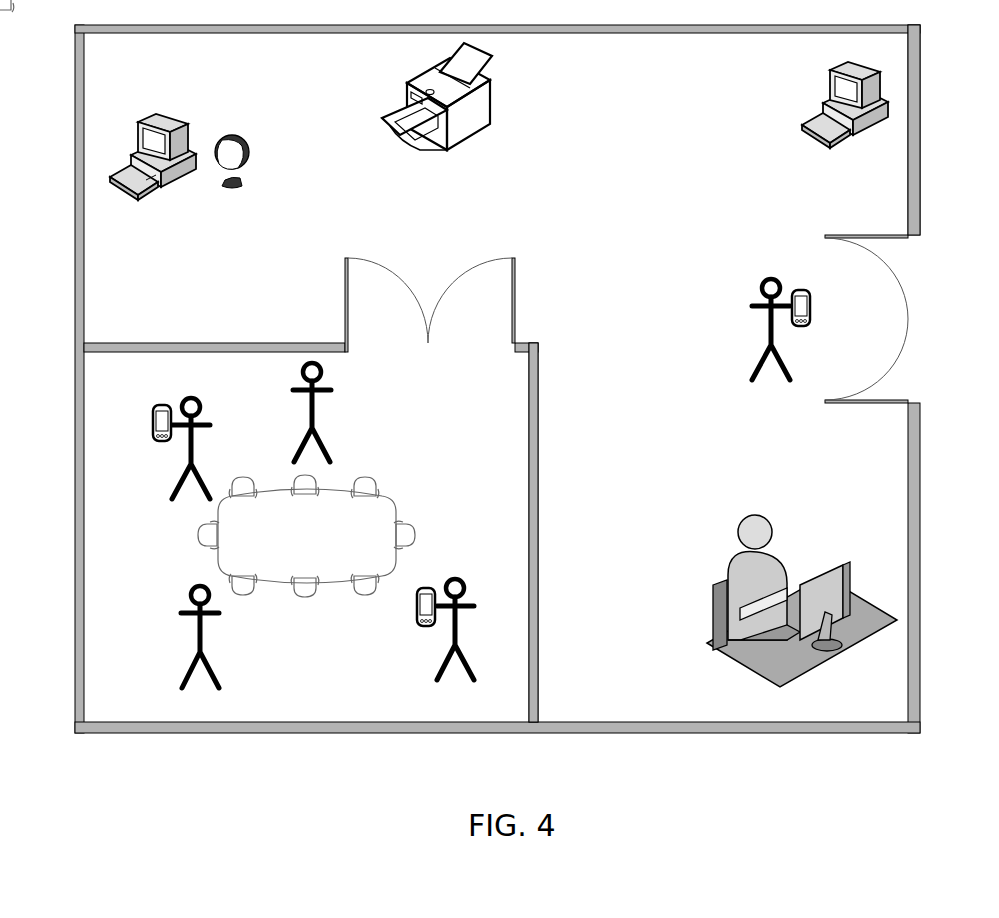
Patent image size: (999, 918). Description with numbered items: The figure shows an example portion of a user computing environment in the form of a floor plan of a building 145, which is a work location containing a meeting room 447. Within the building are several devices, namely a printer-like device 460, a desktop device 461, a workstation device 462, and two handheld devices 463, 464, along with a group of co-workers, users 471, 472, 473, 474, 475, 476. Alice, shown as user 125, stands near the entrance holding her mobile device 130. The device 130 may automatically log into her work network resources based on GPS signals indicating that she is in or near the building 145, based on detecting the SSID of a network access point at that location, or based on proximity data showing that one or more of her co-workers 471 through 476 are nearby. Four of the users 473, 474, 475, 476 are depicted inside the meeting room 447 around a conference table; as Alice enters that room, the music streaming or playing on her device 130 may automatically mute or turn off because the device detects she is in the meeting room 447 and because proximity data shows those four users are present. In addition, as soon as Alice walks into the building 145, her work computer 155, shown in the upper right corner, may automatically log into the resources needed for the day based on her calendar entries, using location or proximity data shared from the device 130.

The user 125 is at (753, 306).
The mobile device 130 is at (801, 290).
The building 145 is at (920, 97).
The work computer 155 is at (825, 100).
The meeting room 447 is at (538, 355).
The device 460 is at (493, 100).
The device 461 is at (160, 113).
The device 462 is at (831, 565).
The device 463 is at (418, 614).
The device 464 is at (160, 441).
The user 471 is at (243, 140).
The user 472 is at (728, 577).
The user 473 is at (440, 665).
The user 474 is at (178, 480).
The user 475 is at (330, 438).
The user 476 is at (199, 641).